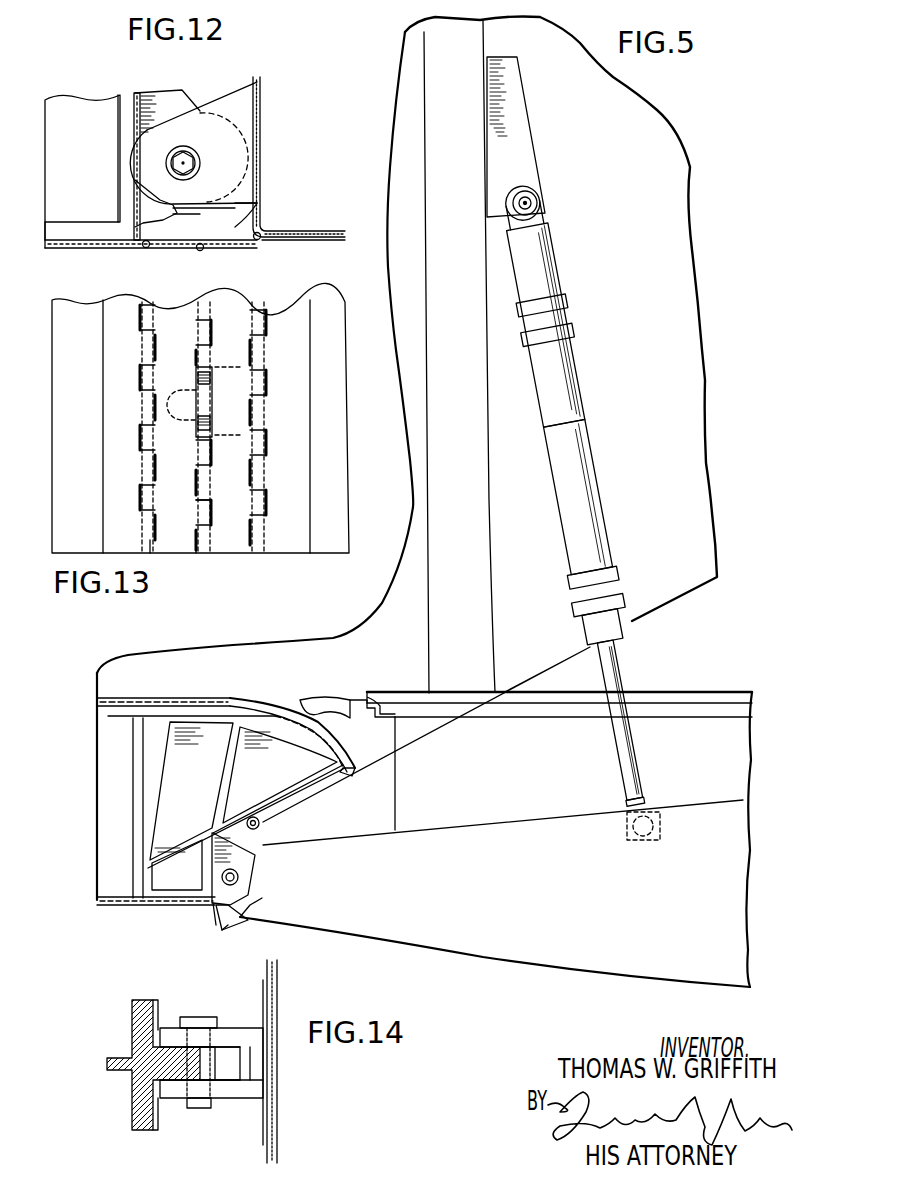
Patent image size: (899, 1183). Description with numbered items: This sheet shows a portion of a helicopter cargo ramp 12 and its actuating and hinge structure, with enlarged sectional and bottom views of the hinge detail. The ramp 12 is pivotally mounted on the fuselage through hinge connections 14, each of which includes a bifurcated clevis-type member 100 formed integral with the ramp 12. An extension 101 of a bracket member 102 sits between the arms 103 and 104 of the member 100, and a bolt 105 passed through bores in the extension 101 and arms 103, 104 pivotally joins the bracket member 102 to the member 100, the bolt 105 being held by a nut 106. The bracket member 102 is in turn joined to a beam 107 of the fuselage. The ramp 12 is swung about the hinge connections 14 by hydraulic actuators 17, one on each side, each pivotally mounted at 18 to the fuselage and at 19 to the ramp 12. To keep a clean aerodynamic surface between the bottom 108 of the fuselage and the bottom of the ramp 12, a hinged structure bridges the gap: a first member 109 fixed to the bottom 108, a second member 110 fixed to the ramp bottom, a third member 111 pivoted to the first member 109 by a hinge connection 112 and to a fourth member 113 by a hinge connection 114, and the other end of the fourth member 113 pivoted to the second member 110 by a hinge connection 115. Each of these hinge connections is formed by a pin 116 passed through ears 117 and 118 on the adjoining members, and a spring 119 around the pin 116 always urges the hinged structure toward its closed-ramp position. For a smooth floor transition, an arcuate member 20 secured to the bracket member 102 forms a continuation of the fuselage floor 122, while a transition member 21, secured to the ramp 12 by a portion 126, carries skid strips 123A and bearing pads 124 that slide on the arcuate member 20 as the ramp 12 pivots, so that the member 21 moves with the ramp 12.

In FIG. 12, the ramp 12 is at (324, 229).
In FIG. 5, the ramp 12 is at (580, 976).
In FIG. 14, the ramp 12 is at (285, 1148).
In FIG. 12, the hinge connections 14 is at (117, 67).
In FIG. 5, the hinge connections 14 is at (220, 895).
In FIG. 5, the hydraulic actuators 17 is at (590, 417).
In FIG. 5, the pivotal mounting of actuator to fuselage 18 is at (533, 203).
In FIG. 5, the pivotal connection of actuator to ramp 19 is at (627, 840).
In FIG. 5, the arcuate member 20 is at (252, 698).
In FIG. 5, the transition member 21 is at (345, 730).
In FIG. 12, the bifurcated member 100 is at (210, 100).
In FIG. 14, the bifurcated member 100 is at (268, 1084).
In FIG. 12, the extension 101 is at (187, 84).
In FIG. 14, the extension 101 is at (158, 1028).
In FIG. 12, the bracket member 102 is at (118, 148).
In FIG. 5, the bracket member 102 is at (155, 755).
In FIG. 14, the bracket member 102 is at (132, 1010).
In FIG. 14, the arm 103 is at (237, 1030).
In FIG. 14, the arm 104 is at (233, 1100).
In FIG. 14, the bolt 105 is at (183, 1020).
In FIG. 14, the nut 106 is at (187, 1108).
In FIG. 5, the beam 107 is at (97, 805).
In FIG. 12, the bottom of fuselage 108 is at (45, 242).
In FIG. 5, the bottom of fuselage 108 is at (97, 905).
In FIG. 12, the first member 109 is at (100, 250).
In FIG. 13, the first member 109 is at (145, 470).
In FIG. 5, the first member 109 is at (205, 905).
In FIG. 12, the second member 110 is at (290, 240).
In FIG. 5, the second member 110 is at (250, 912).
In FIG. 12, the third member 111 is at (175, 240).
In FIG. 13, the third member 111 is at (187, 492).
In FIG. 5, the third member 111 is at (215, 922).
In FIG. 12, the hinge connection 112 is at (145, 250).
In FIG. 12, the fourth member 113 is at (240, 222).
In FIG. 13, the fourth member 113 is at (250, 417).
In FIG. 5, the fourth member 113 is at (242, 920).
In FIG. 12, the hinge connection 114 is at (200, 252).
In FIG. 5, the hinge connection 114 is at (230, 925).
In FIG. 12, the hinge connection 115 is at (257, 242).
In FIG. 13, the pin 116 is at (212, 550).
In FIG. 13, the ear 117 is at (205, 522).
In FIG. 13, the ear 118 is at (205, 520).
In FIG. 13, the spring 119 is at (195, 380).
In FIG. 5, the floor 122 is at (167, 685).
In FIG. 5, the skid strips 123A is at (305, 697).
In FIG. 5, the bearing pads 124 is at (310, 738).
In FIG. 5, the portion 126 is at (352, 698).